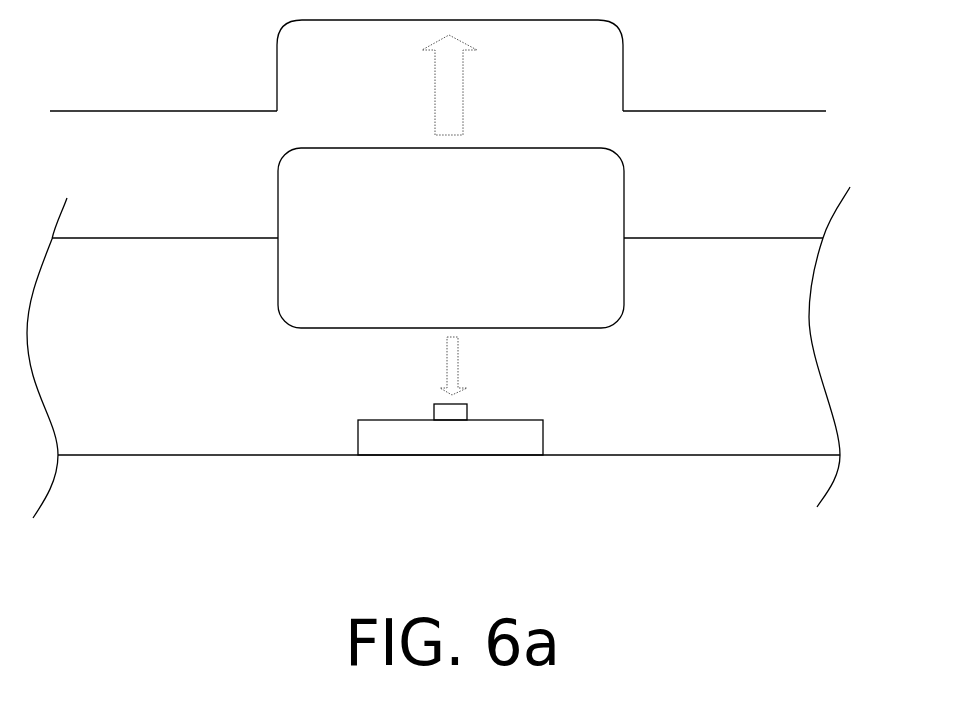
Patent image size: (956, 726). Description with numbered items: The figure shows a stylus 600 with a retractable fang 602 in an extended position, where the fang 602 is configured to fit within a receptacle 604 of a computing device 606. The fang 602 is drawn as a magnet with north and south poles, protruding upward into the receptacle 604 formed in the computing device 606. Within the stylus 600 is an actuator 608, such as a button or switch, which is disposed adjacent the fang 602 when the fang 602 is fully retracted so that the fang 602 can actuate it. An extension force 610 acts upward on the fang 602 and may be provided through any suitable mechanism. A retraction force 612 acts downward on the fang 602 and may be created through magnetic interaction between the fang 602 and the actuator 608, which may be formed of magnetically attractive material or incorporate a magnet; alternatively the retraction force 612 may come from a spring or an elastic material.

The stylus 600 is at (780, 187).
The retractable fang 602 is at (266, 209).
The receptacle 604 is at (362, 20).
The computing device 606 is at (186, 76).
The actuator 608 is at (438, 418).
The extension force 610 is at (452, 94).
The retraction force 612 is at (455, 362).